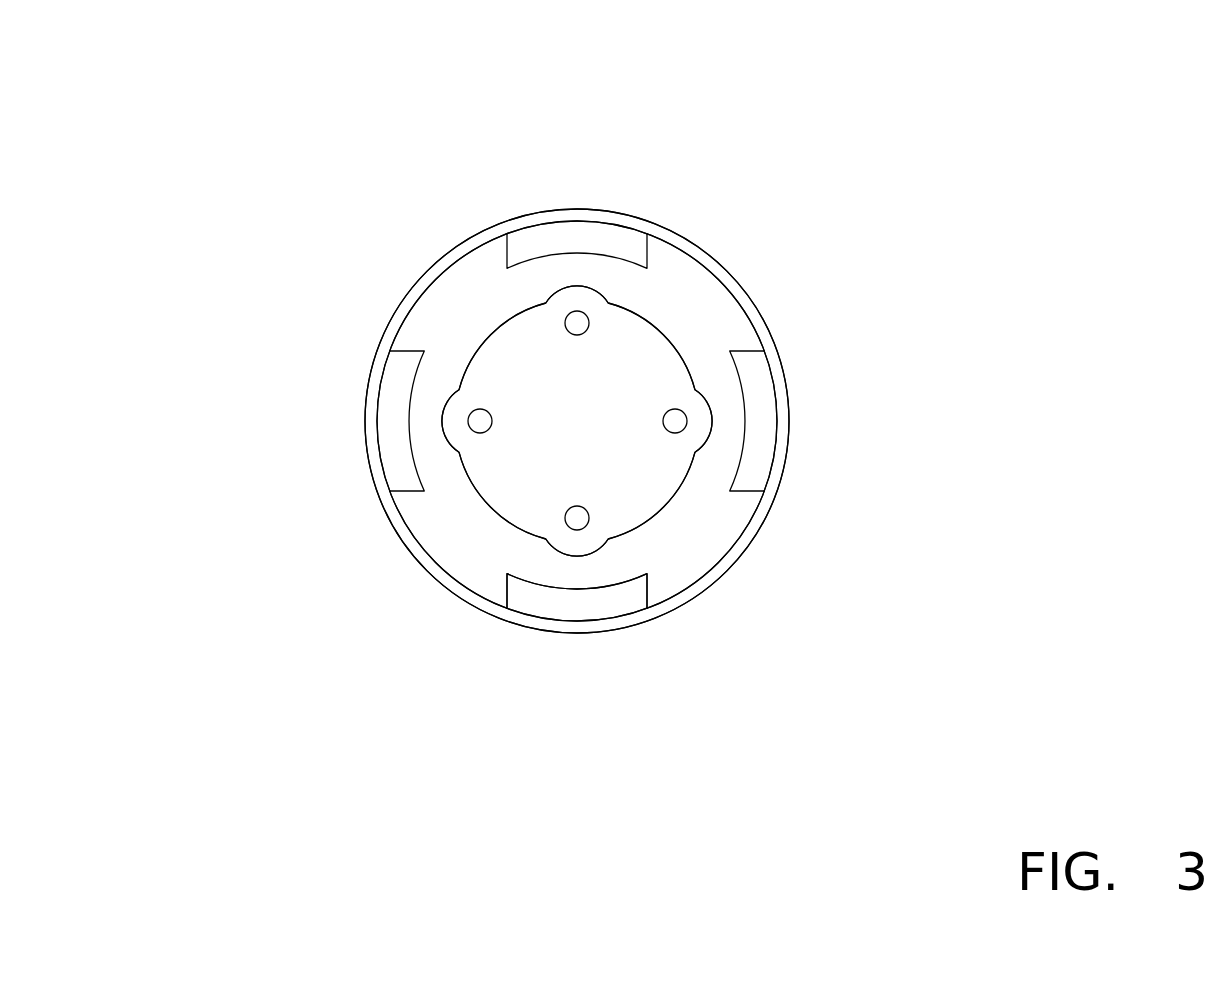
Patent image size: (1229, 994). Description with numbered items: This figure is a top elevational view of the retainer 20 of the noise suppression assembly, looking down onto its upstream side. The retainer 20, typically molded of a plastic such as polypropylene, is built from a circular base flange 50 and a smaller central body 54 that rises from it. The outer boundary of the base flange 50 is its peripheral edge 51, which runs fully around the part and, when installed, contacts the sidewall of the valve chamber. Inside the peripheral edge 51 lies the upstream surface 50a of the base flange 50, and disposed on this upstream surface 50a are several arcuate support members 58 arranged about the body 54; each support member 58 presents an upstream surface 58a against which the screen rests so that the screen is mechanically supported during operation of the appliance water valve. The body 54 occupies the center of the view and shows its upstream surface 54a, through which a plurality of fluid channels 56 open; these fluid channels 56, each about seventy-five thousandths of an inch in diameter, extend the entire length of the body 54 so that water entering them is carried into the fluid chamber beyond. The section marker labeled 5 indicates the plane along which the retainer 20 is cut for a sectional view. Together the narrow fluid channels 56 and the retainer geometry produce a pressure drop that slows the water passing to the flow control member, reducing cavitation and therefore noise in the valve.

The retainer 20 is at (826, 100).
The base flange 50 is at (712, 305).
The upstream surface 50a is at (465, 565).
The peripheral edge 51 is at (367, 378).
The body 54 is at (660, 482).
The upstream surface 54a is at (510, 343).
The fluid channels 56 is at (485, 420).
The support members 58 is at (763, 398).
The upstream surface 58a is at (633, 595).
The section line 5- 5 is at (577, 153).